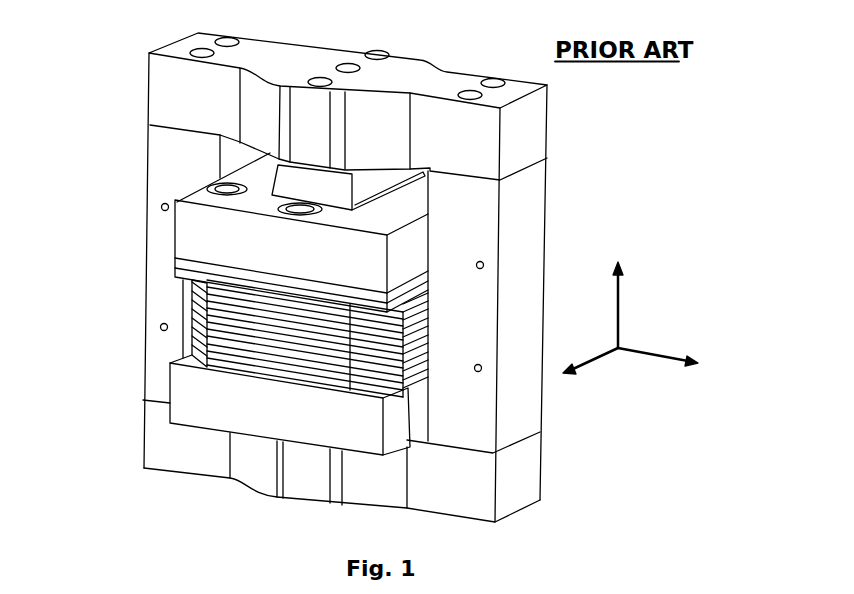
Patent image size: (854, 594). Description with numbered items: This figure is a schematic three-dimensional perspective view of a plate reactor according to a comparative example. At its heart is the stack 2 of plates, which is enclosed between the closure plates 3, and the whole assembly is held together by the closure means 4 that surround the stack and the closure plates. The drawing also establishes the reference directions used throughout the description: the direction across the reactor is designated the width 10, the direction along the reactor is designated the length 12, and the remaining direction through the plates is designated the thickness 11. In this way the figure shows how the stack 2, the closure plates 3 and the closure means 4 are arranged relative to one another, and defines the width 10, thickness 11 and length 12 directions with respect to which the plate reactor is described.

The stack of plates 2 is at (195, 312).
The closure plates 3 is at (197, 235).
The closure means 4 is at (180, 168).
The width 10 is at (655, 358).
The thickness 11 is at (600, 365).
The length 12 is at (620, 292).